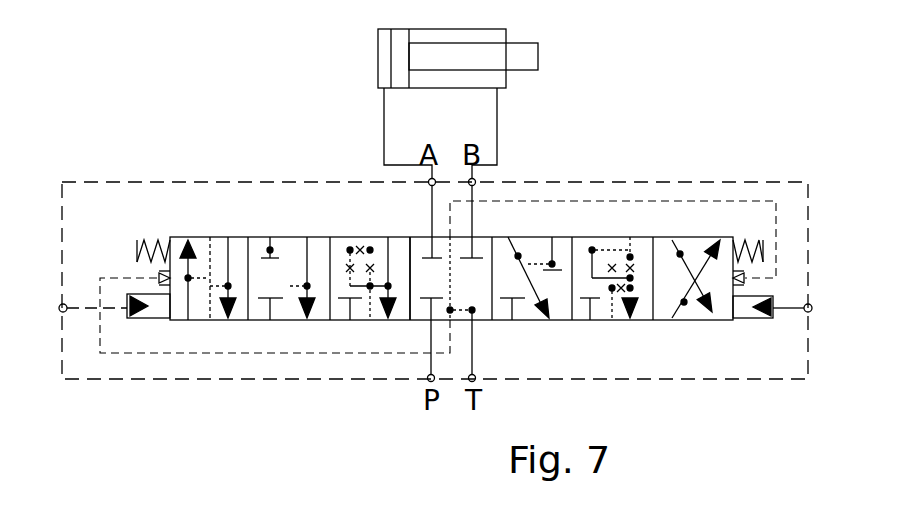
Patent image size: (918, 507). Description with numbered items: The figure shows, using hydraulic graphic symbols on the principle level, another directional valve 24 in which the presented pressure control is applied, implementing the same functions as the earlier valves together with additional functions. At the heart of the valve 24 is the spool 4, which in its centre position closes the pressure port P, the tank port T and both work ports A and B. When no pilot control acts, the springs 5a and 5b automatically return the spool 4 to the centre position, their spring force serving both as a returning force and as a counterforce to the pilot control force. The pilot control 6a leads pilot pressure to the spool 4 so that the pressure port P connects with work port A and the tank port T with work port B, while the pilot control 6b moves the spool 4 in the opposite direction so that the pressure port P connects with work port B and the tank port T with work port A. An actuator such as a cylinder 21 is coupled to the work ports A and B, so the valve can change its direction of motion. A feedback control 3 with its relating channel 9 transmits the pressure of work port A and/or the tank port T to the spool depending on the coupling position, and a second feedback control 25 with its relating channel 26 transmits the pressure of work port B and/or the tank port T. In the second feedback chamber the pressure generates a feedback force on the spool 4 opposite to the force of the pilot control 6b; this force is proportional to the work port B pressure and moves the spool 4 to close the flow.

The cylinder 21 is at (352, 51).
The valve 24 is at (262, 182).
The channel 9 is at (545, 201).
The spring 5a is at (152, 247).
The spring 5b is at (750, 240).
The pilot control 6a is at (150, 318).
The pilot control 6b is at (752, 320).
The feedback control 25 is at (178, 322).
The channel 26 is at (237, 353).
The spool 4 is at (416, 312).
The feedback control 3 is at (733, 285).